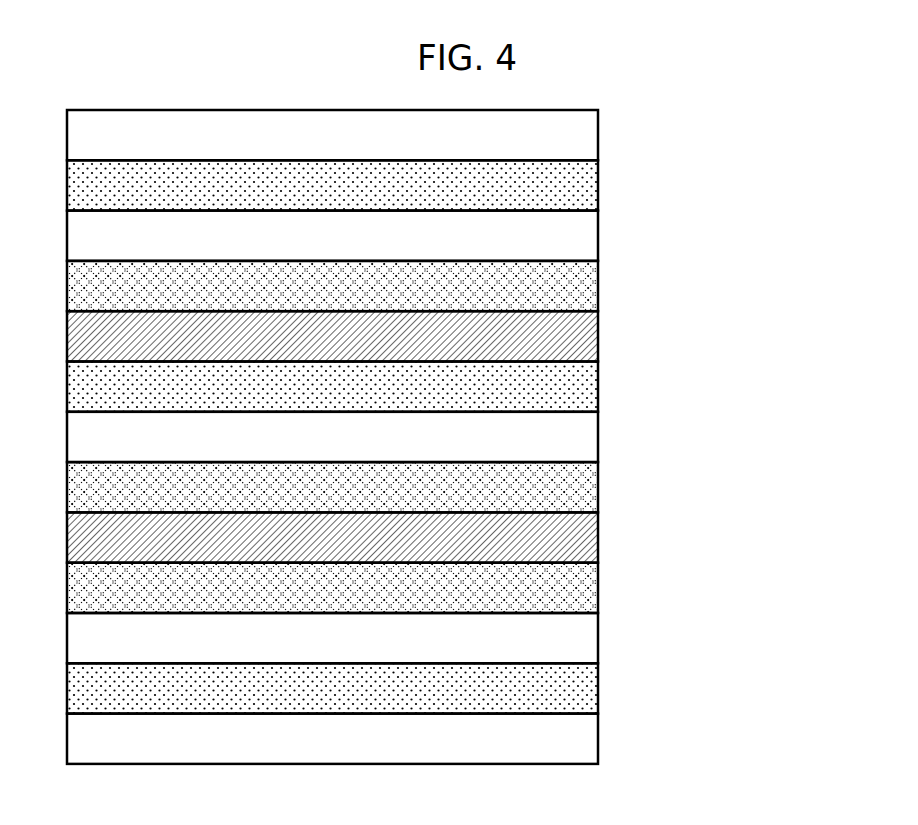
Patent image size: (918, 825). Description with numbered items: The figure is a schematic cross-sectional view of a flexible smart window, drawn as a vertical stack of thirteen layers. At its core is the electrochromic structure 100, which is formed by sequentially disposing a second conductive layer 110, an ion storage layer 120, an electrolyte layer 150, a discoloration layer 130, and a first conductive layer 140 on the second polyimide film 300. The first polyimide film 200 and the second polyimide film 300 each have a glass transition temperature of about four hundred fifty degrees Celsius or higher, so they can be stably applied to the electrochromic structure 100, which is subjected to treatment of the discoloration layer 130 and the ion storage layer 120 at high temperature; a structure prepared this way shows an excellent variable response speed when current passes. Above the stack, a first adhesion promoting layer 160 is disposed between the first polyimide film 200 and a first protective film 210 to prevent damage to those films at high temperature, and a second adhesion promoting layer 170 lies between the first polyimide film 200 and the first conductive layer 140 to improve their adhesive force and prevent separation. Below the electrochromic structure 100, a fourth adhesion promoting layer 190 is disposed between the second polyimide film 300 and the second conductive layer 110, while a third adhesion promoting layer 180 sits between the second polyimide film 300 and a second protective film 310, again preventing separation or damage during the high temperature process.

The electrochromic structure 100 is at (451, 437).
The second conductive layer 110 is at (583, 539).
The ion storage layer 120 is at (583, 494).
The discoloration layer 130 is at (583, 394).
The first conductive layer 140 is at (583, 337).
The electrolyte layer 150 is at (583, 444).
The first adhesion promoting layer 160 is at (583, 188).
The second adhesion promoting layer 170 is at (583, 289).
The third adhesion promoting layer 180 is at (583, 690).
The fourth adhesion promoting layer 190 is at (583, 595).
The first polyimide film 200 is at (583, 238).
The first protective film 210 is at (583, 140).
The second polyimide film 300 is at (583, 638).
The second protective film 310 is at (583, 744).